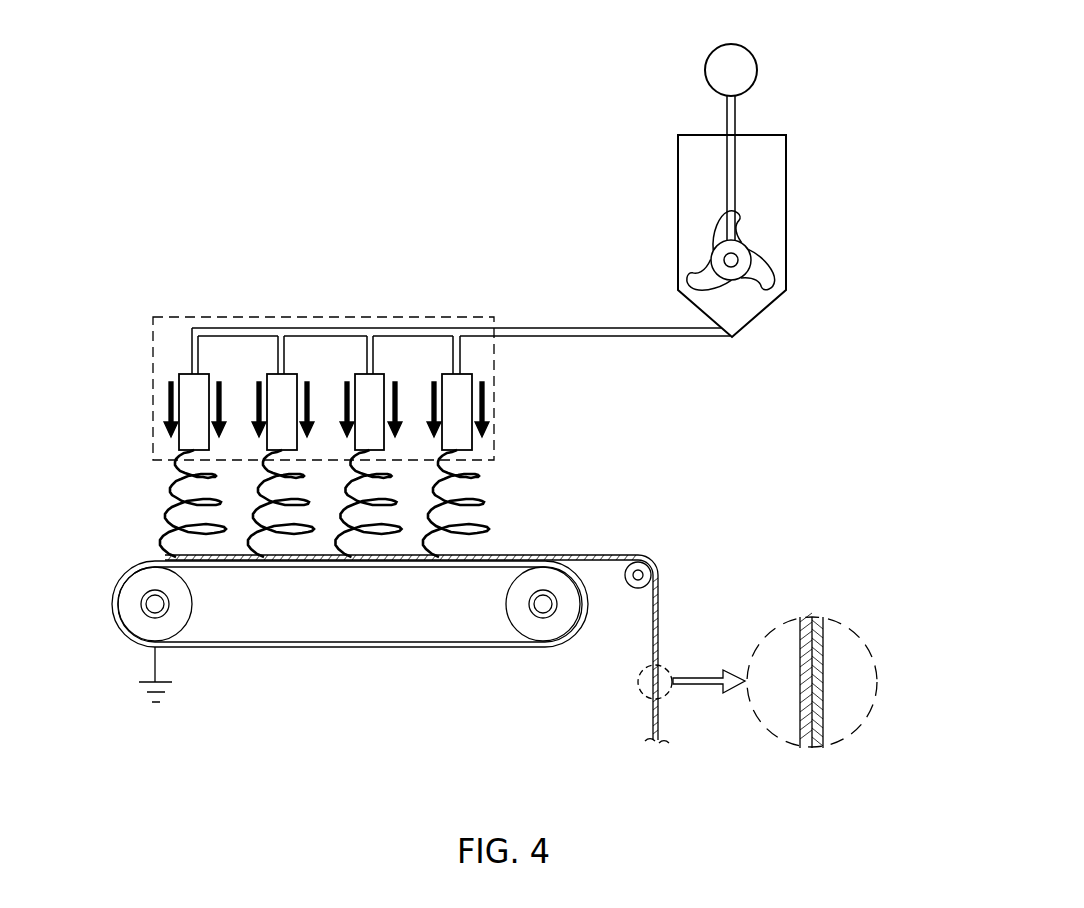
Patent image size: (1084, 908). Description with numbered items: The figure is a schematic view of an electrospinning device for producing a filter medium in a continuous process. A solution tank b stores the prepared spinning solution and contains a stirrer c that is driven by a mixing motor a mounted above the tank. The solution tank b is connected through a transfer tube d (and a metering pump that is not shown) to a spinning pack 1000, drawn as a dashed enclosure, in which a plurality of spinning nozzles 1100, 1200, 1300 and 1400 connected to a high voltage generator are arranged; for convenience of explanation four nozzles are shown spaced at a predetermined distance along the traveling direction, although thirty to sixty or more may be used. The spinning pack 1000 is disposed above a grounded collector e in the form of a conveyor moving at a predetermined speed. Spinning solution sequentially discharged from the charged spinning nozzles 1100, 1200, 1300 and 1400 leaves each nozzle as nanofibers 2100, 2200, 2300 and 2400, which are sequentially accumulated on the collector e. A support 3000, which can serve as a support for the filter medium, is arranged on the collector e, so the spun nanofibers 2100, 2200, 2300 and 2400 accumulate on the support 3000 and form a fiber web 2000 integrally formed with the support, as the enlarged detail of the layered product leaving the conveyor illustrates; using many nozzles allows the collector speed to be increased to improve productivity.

The spinning pack 1000 is at (153, 378).
The spinning nozzle 1100 is at (188, 374).
The spinning nozzle 1200 is at (273, 374).
The spinning nozzle 1300 is at (362, 374).
The spinning nozzle 1400 is at (448, 374).
The nanofiber 2100 is at (158, 528).
The nanofiber 2200 is at (257, 483).
The nanofiber 2300 is at (395, 470).
The nanofiber 2400 is at (493, 523).
The fiber web 2000 is at (618, 555).
The support 3000 is at (243, 560).
The mixing motor a is at (757, 70).
The solution tank b is at (786, 183).
The stirrer c is at (770, 252).
The transfer tube d is at (552, 328).
The collector e is at (338, 563).